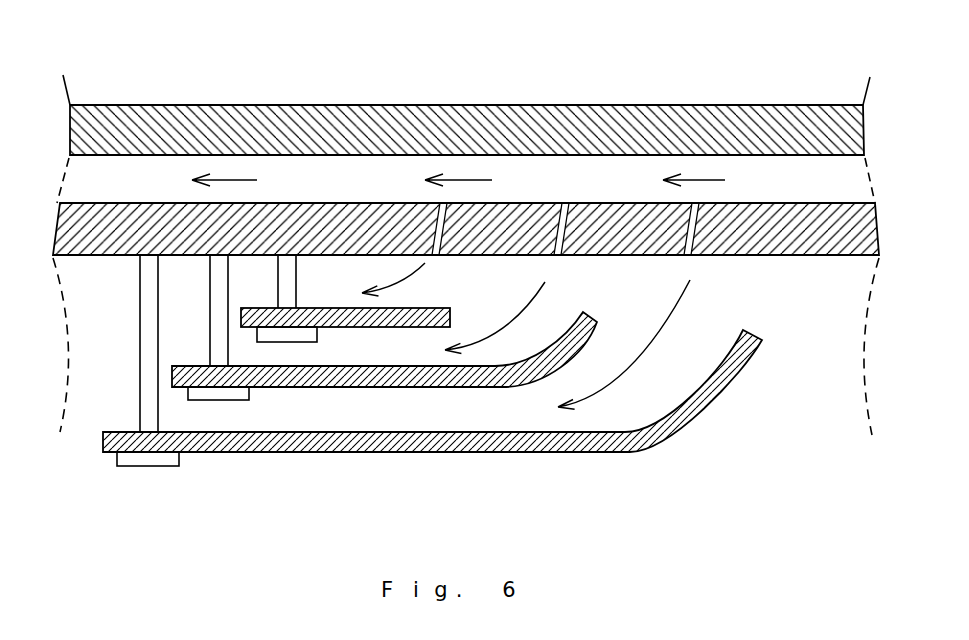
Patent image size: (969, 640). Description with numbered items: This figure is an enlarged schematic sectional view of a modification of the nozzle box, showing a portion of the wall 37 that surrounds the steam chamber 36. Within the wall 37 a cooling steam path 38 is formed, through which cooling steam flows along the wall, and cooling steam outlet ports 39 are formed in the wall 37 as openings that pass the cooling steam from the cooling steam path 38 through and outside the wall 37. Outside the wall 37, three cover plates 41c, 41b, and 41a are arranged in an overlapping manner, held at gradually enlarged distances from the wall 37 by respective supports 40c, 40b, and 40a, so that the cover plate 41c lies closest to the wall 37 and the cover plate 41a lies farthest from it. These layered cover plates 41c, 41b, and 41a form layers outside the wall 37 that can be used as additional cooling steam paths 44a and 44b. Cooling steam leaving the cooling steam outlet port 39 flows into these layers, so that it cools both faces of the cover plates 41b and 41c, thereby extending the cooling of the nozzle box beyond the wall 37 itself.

The steam chamber 36 is at (449, 88).
The wall 37 is at (747, 213).
The cooling steam path 38 is at (327, 180).
The cooling steam outlet port 39 is at (570, 207).
The support 40a is at (149, 467).
The support 40b is at (219, 400).
The support 40c is at (293, 342).
The cover plate 41a is at (597, 452).
The cover plate 41b is at (507, 387).
The cover plate 41c is at (420, 327).
The additional cooling steam path 44a is at (385, 423).
The additional cooling steam path 44b is at (385, 362).